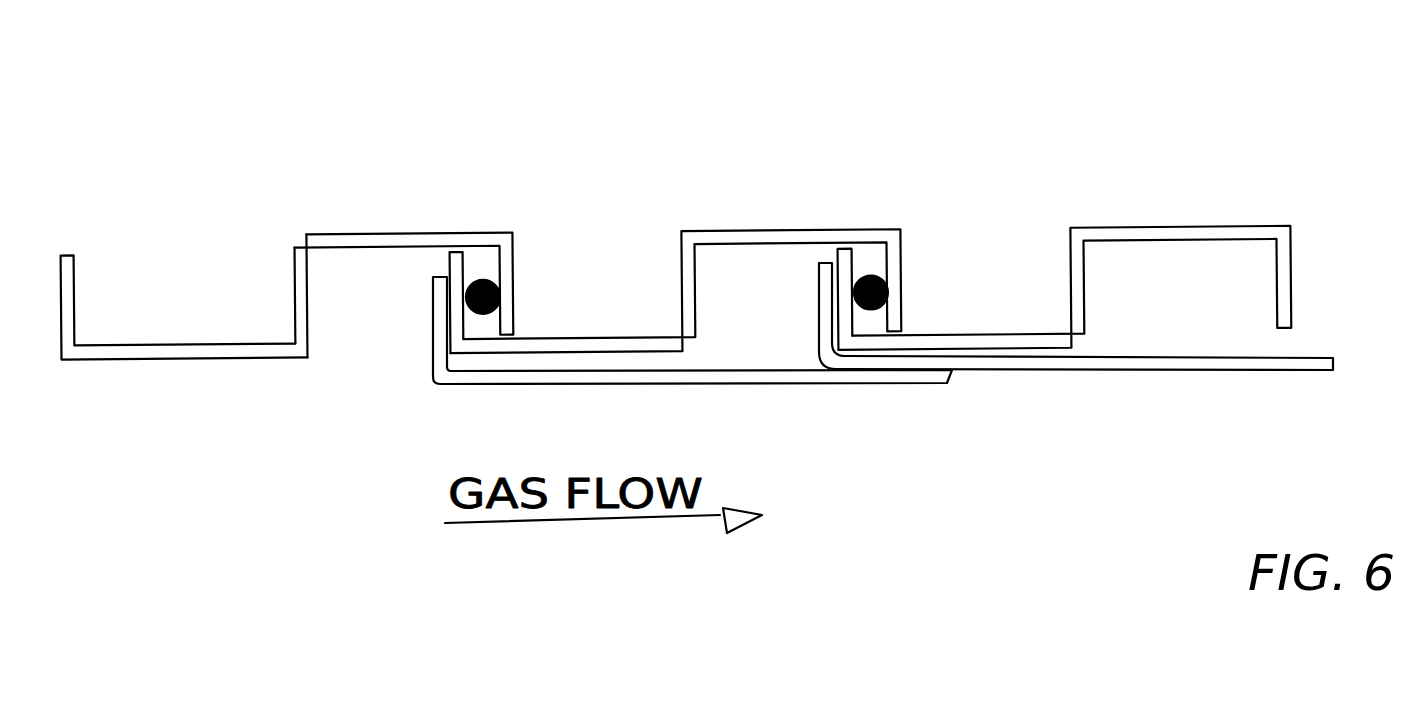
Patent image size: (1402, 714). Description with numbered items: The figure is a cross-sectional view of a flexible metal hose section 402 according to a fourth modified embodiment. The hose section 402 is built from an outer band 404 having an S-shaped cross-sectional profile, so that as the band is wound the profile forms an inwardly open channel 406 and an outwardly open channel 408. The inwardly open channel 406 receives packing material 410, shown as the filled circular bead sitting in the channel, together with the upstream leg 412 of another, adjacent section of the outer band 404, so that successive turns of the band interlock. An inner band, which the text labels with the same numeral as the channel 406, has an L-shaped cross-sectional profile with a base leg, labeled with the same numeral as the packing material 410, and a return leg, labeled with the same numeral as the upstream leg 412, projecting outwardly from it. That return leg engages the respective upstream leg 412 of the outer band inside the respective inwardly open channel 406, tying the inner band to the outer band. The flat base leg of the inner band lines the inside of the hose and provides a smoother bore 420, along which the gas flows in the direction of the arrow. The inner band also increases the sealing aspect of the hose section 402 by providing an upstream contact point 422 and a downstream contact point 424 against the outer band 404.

The flexible metal hose section 402 is at (1092, 125).
The outer band 404 is at (512, 237).
The inwardly open channel 406 is at (330, 245).
The outwardly open channel 408 is at (110, 342).
The packing material 410 is at (487, 277).
The upstream leg 412 is at (459, 248).
The bore 420 is at (798, 383).
The upstream contact point 422 is at (453, 322).
The downstream contact point 424 is at (902, 370).